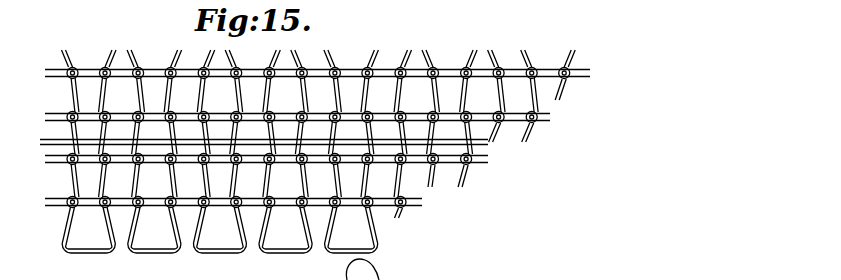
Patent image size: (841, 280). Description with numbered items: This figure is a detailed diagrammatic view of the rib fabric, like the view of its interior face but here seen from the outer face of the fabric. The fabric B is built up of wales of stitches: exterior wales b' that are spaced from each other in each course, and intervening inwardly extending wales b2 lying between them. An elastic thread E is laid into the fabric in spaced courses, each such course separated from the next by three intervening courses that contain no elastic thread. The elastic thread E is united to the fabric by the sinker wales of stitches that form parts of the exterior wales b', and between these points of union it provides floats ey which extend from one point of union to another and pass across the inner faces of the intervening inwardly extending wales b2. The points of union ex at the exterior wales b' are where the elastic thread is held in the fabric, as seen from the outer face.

The wire fabric B is at (68, 62).
The elastic thread E is at (57, 138).
The inwardly extending wales b2 is at (220, 159).
The exterior wales b' is at (219, 161).
The floats ey is at (126, 143).
The link eye ex is at (261, 142).